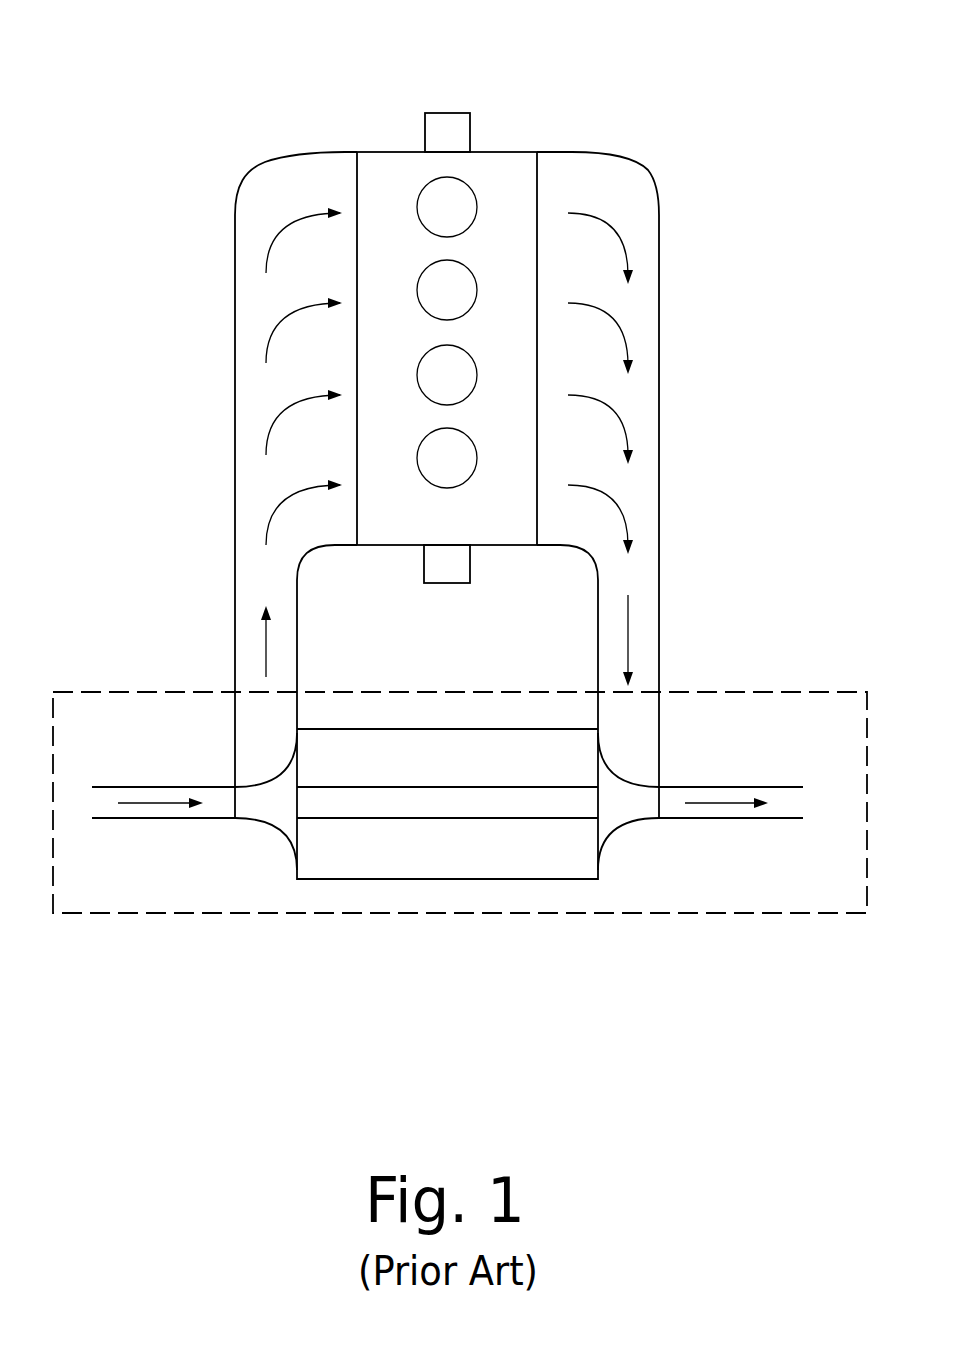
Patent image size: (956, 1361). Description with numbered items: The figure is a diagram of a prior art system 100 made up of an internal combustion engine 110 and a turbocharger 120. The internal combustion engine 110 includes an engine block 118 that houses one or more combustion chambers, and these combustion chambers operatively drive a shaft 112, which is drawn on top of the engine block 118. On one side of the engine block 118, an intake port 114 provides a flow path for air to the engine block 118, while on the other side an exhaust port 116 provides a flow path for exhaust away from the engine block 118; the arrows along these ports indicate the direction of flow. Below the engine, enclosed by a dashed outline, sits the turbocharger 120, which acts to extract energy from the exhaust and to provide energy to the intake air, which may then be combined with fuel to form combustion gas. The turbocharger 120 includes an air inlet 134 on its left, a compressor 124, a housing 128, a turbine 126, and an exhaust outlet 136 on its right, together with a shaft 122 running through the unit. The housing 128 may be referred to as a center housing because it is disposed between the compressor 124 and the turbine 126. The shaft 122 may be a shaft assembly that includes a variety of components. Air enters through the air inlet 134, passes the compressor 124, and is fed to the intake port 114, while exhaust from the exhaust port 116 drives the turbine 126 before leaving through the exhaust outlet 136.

The prior art system 100 is at (650, 55).
The internal combustion engine 110 is at (400, 150).
The shaft 112 is at (449, 113).
The intake port 114 is at (258, 175).
The exhaust port 116 is at (652, 190).
The engine block 118 is at (470, 534).
The turbocharger 120 is at (731, 692).
The shaft 122 is at (445, 820).
The compressor 124 is at (272, 832).
The turbine 126 is at (625, 830).
The housing 128 is at (470, 771).
The air inlet 134 is at (186, 787).
The exhaust outlet 136 is at (733, 786).